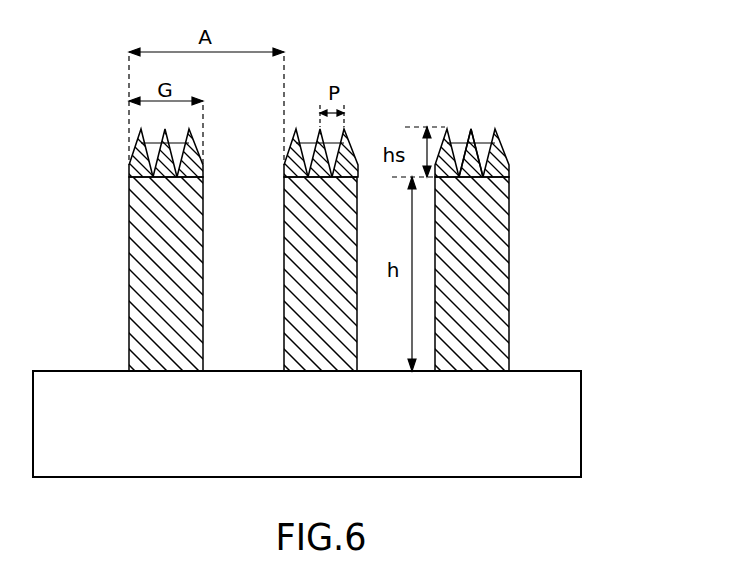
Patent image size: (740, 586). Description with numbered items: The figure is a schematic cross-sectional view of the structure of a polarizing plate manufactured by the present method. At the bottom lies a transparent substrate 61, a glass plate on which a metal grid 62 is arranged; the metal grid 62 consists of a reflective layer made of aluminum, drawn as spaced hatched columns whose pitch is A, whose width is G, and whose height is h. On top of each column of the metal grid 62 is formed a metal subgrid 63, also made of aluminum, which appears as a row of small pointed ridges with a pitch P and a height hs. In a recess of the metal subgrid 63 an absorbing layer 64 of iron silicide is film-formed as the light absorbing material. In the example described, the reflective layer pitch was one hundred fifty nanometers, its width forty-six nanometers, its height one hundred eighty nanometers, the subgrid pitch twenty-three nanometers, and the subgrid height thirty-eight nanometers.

The transparent substrate 61 is at (581, 420).
The metal grid 62 is at (509, 270).
The metal subgrid 63 is at (505, 152).
The absorbing layer 64 is at (462, 137).